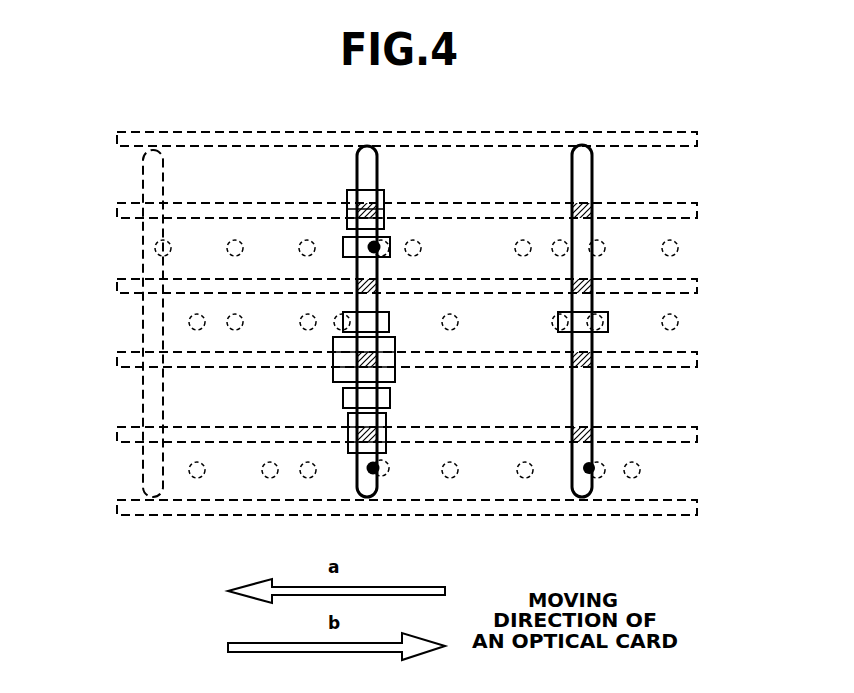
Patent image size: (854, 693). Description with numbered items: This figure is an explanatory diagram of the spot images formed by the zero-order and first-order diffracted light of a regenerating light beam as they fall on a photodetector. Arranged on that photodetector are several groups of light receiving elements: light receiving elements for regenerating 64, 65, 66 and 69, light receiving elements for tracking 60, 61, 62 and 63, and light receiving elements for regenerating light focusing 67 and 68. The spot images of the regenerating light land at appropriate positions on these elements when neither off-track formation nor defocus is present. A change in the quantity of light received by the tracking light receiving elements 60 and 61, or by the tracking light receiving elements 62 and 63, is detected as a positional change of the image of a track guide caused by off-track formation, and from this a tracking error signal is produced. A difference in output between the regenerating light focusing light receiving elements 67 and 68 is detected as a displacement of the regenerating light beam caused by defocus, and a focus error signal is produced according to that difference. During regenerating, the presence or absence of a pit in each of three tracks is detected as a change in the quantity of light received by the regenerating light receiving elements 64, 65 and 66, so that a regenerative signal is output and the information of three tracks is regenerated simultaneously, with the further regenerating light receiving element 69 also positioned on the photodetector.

The light receiving element for tracking 60 is at (385, 196).
The light receiving element for tracking 61 is at (385, 227).
The light receiving element for tracking 62 is at (385, 420).
The light receiving element for tracking 63 is at (385, 447).
The light receiving element for regenerating 64 is at (345, 311).
The light receiving element for regenerating 65 is at (343, 244).
The light receiving element for regenerating 66 is at (390, 400).
The light receiving element for regenerating light focusing 67 is at (333, 358).
The light receiving element for regenerating light focusing 68 is at (395, 362).
The light receiving element for regenerating 69 is at (608, 320).